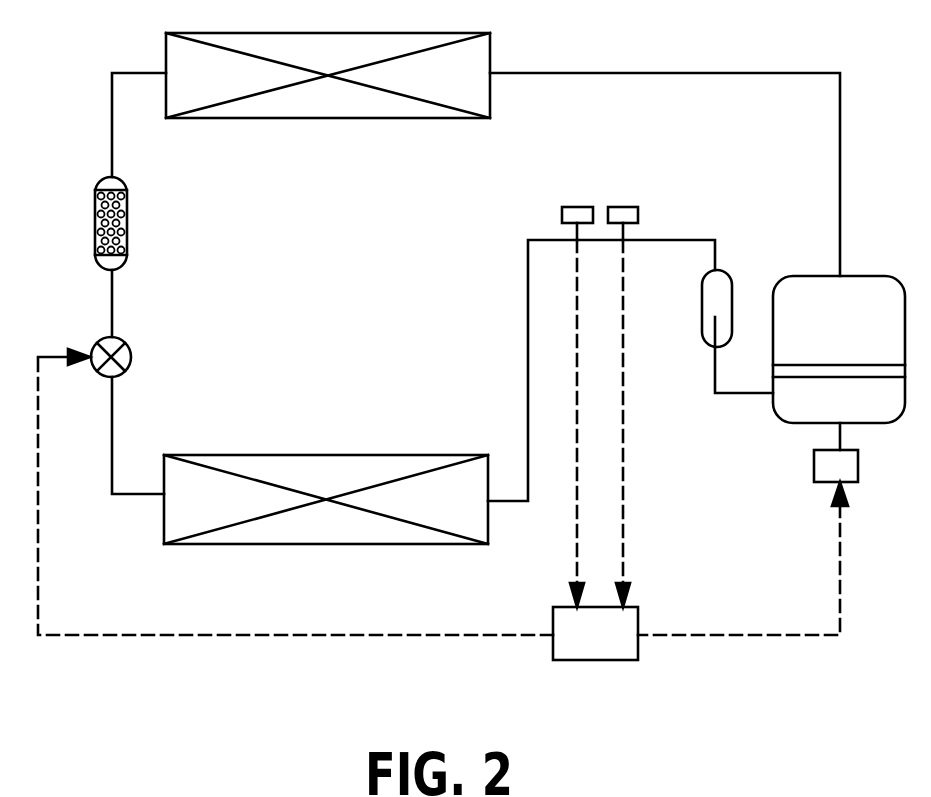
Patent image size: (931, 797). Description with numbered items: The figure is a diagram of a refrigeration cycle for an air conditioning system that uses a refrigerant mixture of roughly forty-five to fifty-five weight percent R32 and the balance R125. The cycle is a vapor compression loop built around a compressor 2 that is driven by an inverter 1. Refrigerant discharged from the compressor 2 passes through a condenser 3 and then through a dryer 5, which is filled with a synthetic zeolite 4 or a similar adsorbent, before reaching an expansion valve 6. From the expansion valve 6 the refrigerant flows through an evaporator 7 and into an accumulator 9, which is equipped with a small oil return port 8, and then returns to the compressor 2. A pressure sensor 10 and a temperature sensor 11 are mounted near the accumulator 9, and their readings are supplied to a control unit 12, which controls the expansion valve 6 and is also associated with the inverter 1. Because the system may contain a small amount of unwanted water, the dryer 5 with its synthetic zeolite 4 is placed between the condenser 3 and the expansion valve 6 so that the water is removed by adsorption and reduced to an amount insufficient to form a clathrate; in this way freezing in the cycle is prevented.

The inverter 1 is at (814, 462).
The compressor 2 is at (815, 276).
The condenser 3 is at (310, 33).
The synthetic zeolite 4 is at (95, 224).
The dryer 5 is at (128, 214).
The expansion valve 6 is at (131, 357).
The evaporator 7 is at (330, 544).
The oil return port 8 is at (713, 320).
The accumulator 9 is at (702, 300).
The pressure sensor 10 is at (572, 207).
The temperature sensor 11 is at (630, 207).
The control unit 12 is at (597, 660).